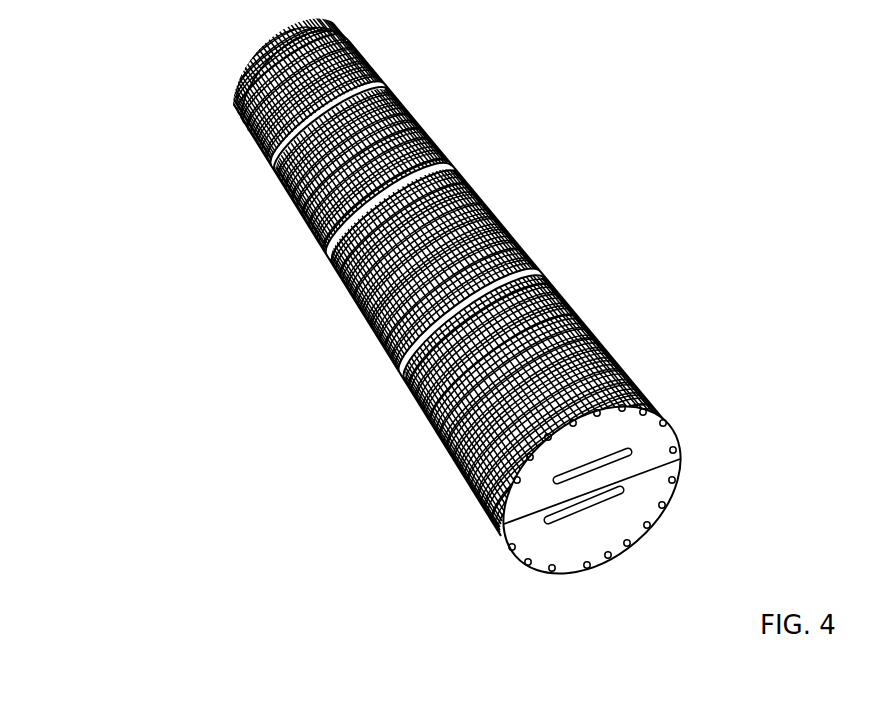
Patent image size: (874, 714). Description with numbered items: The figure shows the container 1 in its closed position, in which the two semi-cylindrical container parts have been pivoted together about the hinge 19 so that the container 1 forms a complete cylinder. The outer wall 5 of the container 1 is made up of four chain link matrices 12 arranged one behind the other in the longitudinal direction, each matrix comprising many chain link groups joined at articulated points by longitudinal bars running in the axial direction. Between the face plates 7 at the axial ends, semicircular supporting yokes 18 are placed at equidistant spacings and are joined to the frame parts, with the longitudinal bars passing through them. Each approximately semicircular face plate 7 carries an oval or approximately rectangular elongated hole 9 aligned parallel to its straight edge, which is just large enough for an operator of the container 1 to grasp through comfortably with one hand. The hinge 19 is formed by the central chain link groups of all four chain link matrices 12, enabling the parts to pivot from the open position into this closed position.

The container 1 is at (78, 74).
The outer wall 5 is at (237, 122).
The face plate 7 is at (672, 427).
The elongated hole 9 is at (607, 459).
The chain link matrix 12 is at (356, 52).
The supporting yoke 18 is at (546, 272).
The hinge 19 is at (362, 320).